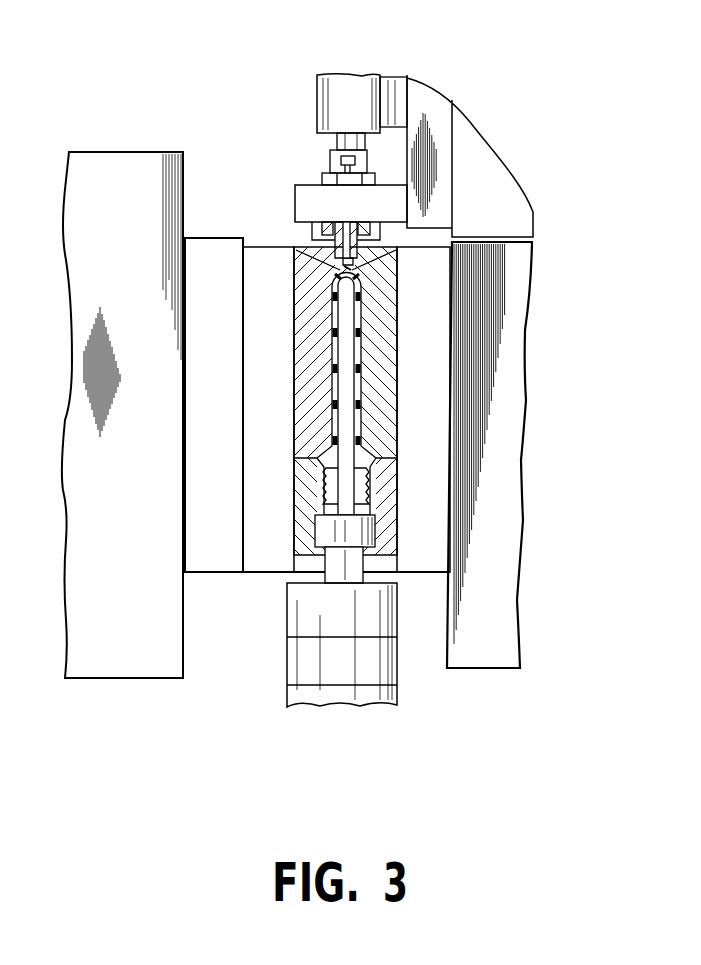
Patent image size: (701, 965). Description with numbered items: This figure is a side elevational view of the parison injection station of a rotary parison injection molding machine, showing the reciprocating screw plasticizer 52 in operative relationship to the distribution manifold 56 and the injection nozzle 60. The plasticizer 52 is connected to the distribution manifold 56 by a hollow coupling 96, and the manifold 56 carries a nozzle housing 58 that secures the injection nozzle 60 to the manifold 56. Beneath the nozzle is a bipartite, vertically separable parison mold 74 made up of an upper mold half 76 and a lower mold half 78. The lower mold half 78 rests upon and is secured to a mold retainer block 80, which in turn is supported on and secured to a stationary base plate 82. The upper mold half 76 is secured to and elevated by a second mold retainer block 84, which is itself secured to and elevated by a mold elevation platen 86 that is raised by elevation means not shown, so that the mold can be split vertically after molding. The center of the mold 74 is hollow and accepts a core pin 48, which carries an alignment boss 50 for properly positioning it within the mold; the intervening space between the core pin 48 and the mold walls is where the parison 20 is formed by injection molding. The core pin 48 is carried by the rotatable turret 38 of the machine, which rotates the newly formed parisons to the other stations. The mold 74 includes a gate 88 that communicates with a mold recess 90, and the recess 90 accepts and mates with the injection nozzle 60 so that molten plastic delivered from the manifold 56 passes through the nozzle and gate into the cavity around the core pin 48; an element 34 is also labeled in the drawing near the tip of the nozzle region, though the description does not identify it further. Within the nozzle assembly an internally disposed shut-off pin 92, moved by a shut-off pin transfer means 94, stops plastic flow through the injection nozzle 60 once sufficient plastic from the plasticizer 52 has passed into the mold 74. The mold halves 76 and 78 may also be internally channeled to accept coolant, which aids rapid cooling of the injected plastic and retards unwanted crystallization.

The parison 20 is at (340, 348).
The tip 34 is at (341, 266).
The rotatable turret 38 is at (297, 611).
The core pin 48 is at (340, 487).
The alignment boss 50 is at (371, 531).
The reciprocating screw plasticizer 52 is at (316, 82).
The plastic distribution manifold 56 is at (294, 195).
The nozzle housing 58 is at (320, 232).
The injection nozzle 60 is at (370, 245).
The parison mold 74 is at (291, 390).
The upper mold half 76 is at (297, 316).
The lower mold half 78 is at (399, 381).
The mold retainer block 80 is at (434, 424).
The stationary base plate 82 is at (528, 498).
The mold retainer block 84 is at (274, 429).
The mold elevation platen 86 is at (132, 549).
The gate 88 is at (352, 272).
The mold recess 90 is at (365, 263).
The shut-off pin 92 is at (362, 168).
The shut-off pin transfer means 94 is at (340, 160).
The hollow coupling 96 is at (340, 140).